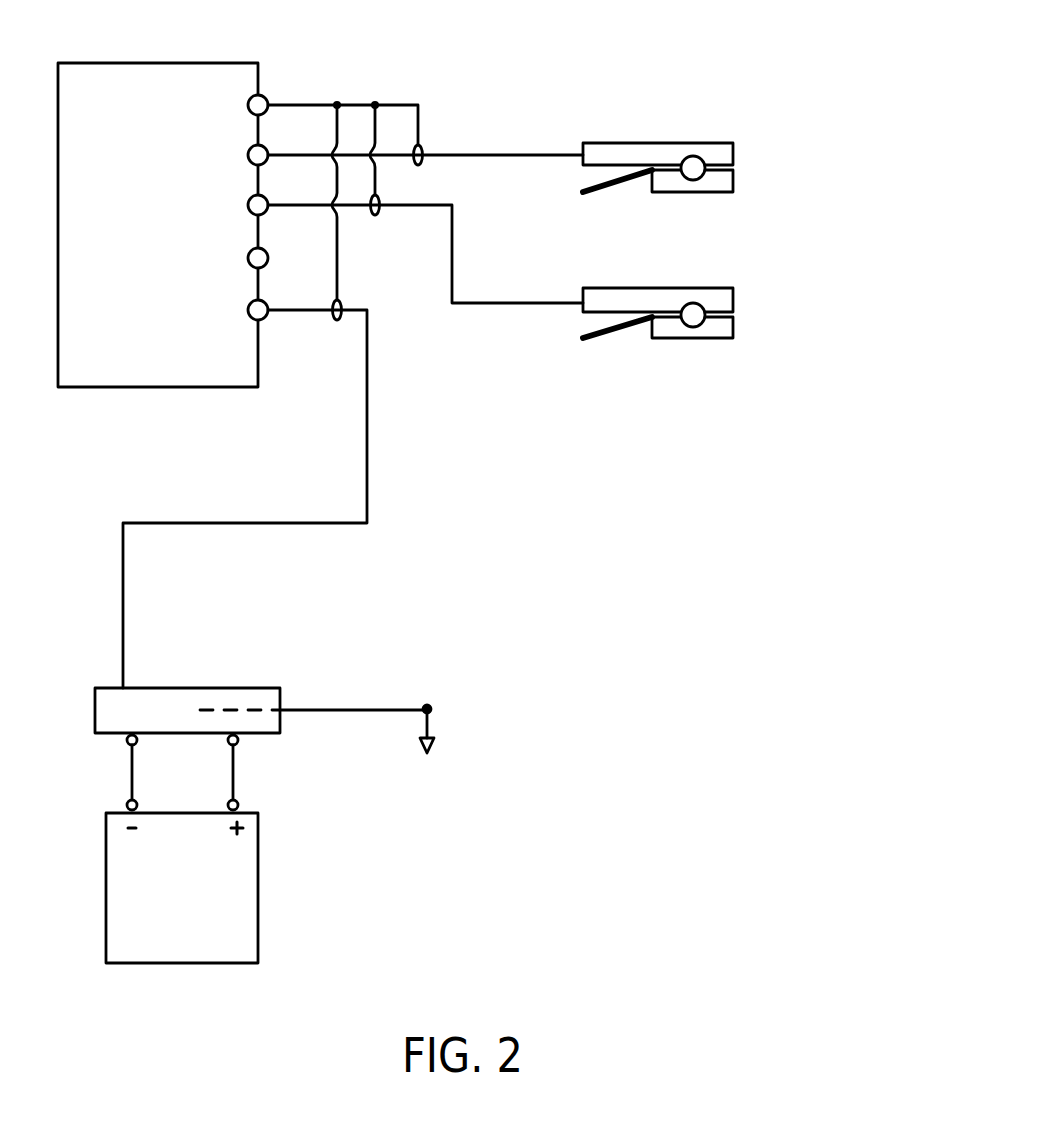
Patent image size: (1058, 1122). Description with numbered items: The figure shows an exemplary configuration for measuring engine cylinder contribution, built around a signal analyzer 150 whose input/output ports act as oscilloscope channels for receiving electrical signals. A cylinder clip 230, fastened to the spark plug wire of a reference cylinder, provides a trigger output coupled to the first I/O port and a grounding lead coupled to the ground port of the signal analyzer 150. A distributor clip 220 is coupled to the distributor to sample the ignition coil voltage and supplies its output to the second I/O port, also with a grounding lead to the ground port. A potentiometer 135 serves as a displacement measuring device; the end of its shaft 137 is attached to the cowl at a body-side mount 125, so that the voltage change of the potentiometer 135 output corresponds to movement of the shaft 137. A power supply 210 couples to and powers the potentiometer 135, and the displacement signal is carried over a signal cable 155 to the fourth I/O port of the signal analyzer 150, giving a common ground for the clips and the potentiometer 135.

The signal analyzer 150 is at (105, 63).
The cylinder clip 230 is at (719, 143).
The distributor clip 220 is at (720, 288).
The signal cable 155 is at (367, 467).
The potentiometer 135 is at (233, 688).
The shaft 137 is at (317, 712).
The body-side mount 125 is at (427, 709).
The power supply 210 is at (258, 875).